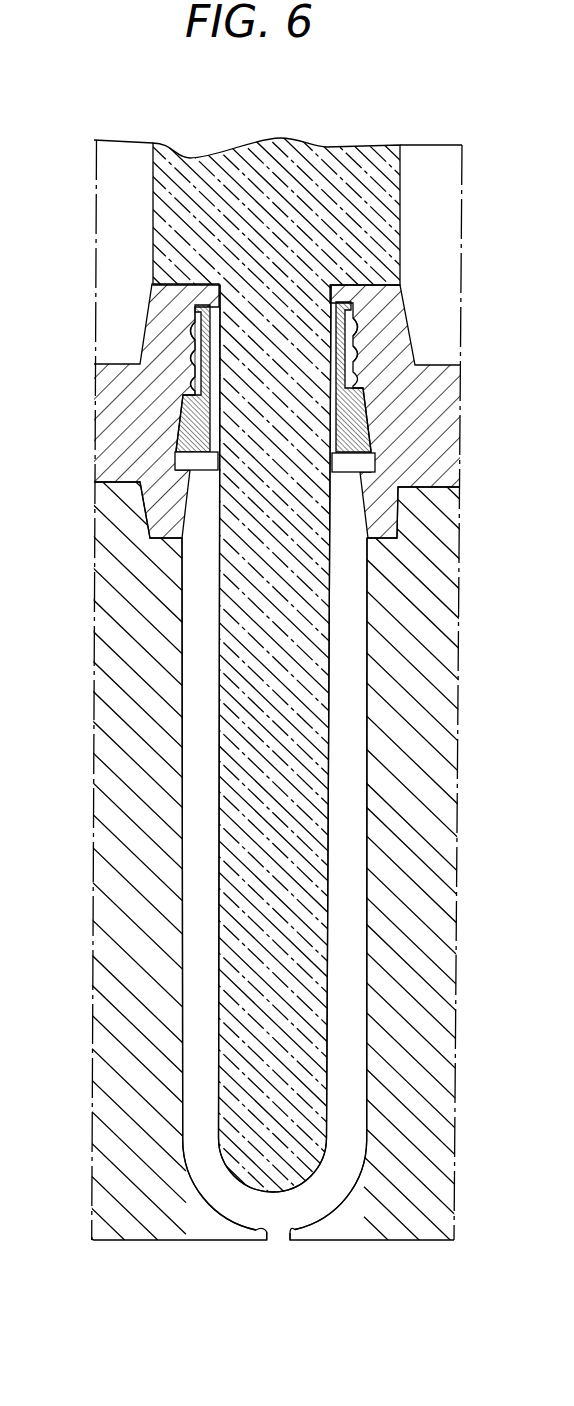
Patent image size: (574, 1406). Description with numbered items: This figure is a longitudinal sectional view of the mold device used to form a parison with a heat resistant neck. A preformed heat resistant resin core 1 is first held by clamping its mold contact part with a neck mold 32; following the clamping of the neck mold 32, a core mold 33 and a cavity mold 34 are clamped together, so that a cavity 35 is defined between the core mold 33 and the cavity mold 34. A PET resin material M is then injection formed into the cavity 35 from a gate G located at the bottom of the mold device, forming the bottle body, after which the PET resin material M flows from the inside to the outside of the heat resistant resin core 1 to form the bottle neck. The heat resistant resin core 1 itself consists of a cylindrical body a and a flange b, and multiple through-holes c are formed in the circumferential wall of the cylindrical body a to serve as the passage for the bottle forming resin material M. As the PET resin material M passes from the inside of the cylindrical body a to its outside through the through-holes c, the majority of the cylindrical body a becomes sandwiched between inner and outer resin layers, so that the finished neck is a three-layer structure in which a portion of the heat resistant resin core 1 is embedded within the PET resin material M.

The core mold 33 is at (315, 134).
The neck mold 32 is at (420, 315).
The cavity mold 34 is at (413, 660).
The cavity 35 is at (191, 737).
The heat resistant resin core 1 is at (364, 435).
The cylindrical body a is at (188, 358).
The flange b is at (176, 446).
The through-holes c is at (193, 323).
The gate G is at (267, 1240).
The PET resin material M is at (278, 1224).